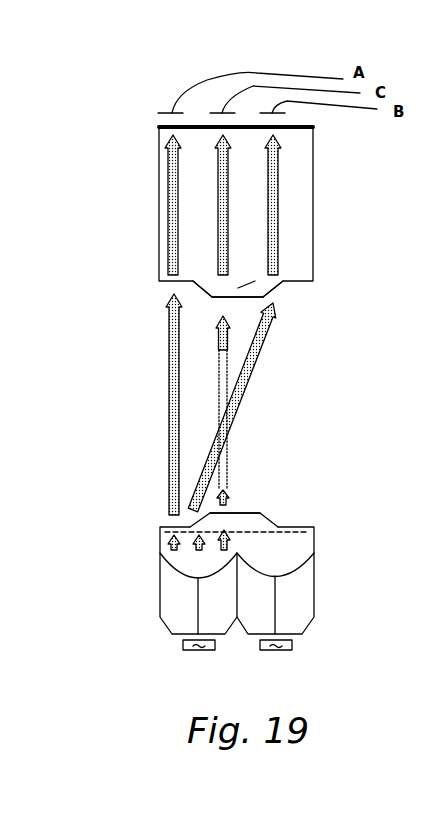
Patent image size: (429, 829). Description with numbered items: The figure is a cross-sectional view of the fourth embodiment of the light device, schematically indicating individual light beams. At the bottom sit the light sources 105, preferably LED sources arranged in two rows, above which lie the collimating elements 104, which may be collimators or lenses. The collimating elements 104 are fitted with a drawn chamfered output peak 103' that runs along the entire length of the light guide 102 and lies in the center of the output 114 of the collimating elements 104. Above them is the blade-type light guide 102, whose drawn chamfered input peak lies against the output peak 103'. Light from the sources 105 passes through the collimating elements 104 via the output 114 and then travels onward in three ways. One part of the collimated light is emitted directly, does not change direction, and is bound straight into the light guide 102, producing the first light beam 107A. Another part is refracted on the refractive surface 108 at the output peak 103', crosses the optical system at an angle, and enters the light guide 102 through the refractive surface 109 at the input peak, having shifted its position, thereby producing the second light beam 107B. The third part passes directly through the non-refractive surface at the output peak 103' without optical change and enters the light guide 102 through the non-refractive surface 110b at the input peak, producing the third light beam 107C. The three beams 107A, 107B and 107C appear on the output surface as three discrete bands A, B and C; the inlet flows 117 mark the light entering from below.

The light guide 102 is at (302, 174).
The output peak 103' is at (328, 549).
The collimating elements 104 is at (215, 593).
The light sources 105 is at (270, 650).
The first light beam 107A is at (168, 163).
The second light beam 107B is at (278, 188).
The third light beam 107C is at (218, 207).
The refractive surface 108 is at (190, 519).
The refractive surface 109 is at (193, 291).
The non-refractive surface 110b is at (263, 297).
The output 114 is at (300, 531).
The inlet flows 117 is at (226, 551).